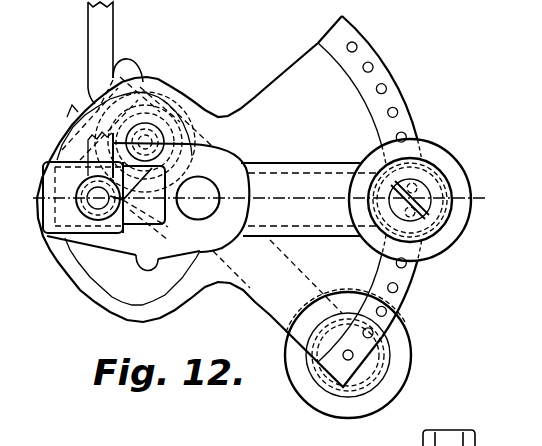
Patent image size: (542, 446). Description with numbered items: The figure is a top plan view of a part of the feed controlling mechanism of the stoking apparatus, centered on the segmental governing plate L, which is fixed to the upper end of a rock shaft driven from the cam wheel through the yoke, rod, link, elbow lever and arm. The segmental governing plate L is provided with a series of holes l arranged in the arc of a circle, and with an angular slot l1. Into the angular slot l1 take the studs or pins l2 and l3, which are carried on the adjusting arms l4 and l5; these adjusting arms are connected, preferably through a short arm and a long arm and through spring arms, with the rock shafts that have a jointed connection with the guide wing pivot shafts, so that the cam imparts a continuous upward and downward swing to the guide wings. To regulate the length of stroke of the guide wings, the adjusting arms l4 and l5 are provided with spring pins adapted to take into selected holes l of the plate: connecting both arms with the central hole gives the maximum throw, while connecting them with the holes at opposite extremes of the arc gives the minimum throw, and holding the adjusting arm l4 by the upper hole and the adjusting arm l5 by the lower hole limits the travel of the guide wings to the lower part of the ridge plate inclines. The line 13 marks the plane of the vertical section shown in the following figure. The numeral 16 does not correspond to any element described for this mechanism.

The holes l is at (422, 301).
The angular slot l1 is at (138, 263).
The stud or pin l2 is at (135, 210).
The stud or pin l3 is at (147, 133).
The adjusting arm l4 is at (314, 199).
The adjusting arm l5 is at (133, 67).
The section line 13 is at (260, 200).
The segmental governing plate L is at (378, 217).
The nut 16 is at (490, 445).